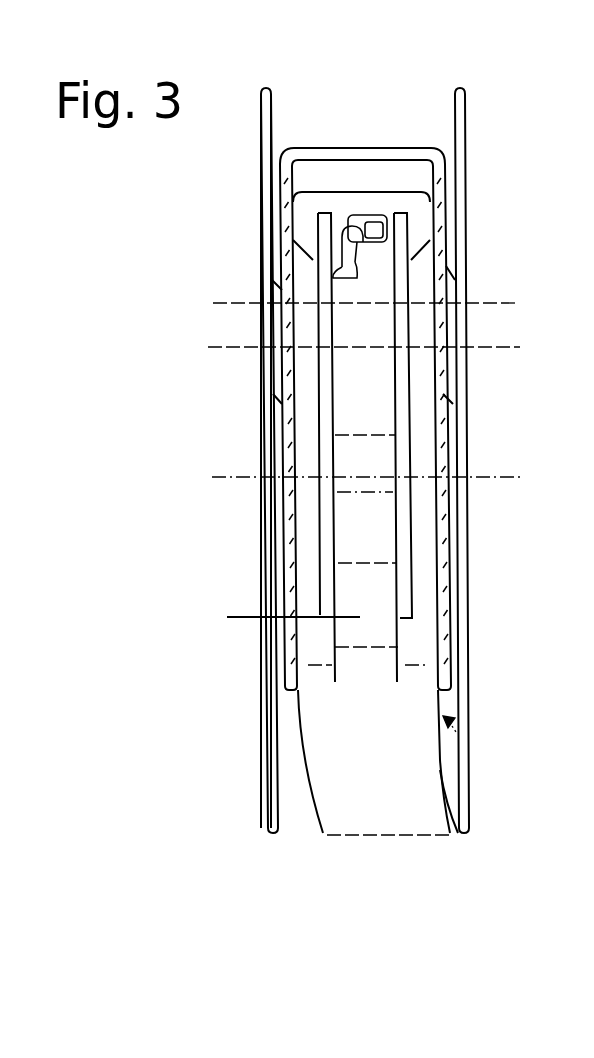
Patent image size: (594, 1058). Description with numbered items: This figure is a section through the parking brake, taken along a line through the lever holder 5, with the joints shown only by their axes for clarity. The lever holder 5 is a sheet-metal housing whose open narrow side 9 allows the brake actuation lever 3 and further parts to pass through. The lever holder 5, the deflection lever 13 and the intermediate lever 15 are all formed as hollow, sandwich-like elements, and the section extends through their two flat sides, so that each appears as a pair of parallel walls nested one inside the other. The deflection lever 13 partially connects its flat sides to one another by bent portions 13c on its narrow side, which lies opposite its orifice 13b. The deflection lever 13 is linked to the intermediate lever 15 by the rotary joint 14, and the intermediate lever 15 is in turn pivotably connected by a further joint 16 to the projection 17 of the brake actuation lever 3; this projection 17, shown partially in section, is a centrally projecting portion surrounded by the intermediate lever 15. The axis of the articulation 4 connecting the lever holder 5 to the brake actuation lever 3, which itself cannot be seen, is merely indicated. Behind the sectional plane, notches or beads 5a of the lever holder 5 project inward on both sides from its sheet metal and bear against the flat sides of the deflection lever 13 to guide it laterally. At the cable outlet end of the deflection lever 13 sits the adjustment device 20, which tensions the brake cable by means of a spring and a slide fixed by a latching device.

The brake actuation lever 3 is at (360, 695).
The articulation 4 is at (233, 475).
The lever holder 5 is at (532, 397).
The notches or beads 5a is at (263, 570).
The narrow side 9 is at (300, 815).
The deflection lever 13 is at (520, 527).
The orifice 13b is at (473, 753).
The bent portions 13c is at (392, 147).
The rotary joint 14 is at (492, 303).
The intermediate lever 15 is at (300, 369).
The further joint 16 is at (476, 530).
The projection 17 is at (312, 447).
The adjustment device 20 is at (341, 228).